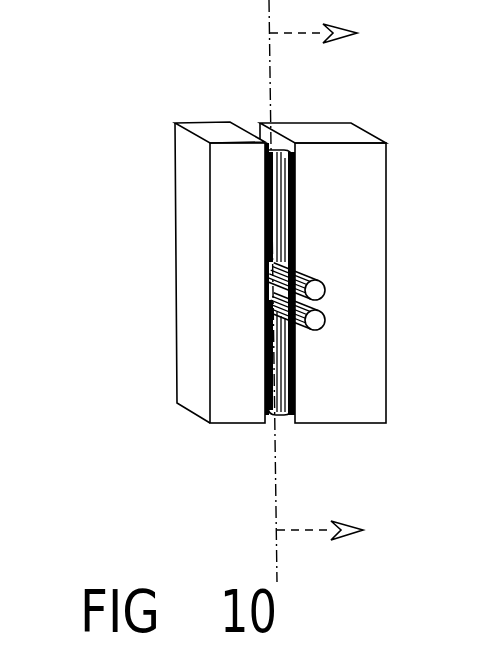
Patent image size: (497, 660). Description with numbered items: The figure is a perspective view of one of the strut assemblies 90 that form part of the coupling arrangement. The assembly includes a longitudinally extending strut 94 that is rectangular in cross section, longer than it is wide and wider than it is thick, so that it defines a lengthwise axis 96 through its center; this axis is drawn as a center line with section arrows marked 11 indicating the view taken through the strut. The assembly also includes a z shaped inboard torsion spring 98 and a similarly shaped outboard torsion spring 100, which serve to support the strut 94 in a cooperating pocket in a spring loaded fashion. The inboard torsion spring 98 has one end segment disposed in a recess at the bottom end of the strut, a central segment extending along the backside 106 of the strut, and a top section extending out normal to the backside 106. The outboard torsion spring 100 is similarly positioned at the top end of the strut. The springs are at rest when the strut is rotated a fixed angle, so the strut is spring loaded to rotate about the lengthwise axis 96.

The strut assembly 90 is at (253, 250).
The strut 94 is at (187, 307).
The backside 106 is at (245, 360).
The outboard torsion spring 100 is at (292, 200).
The inboard torsion spring 98 is at (297, 363).
The lengthwise axis 96 is at (277, 562).
The section line 11- 11 is at (340, 281).